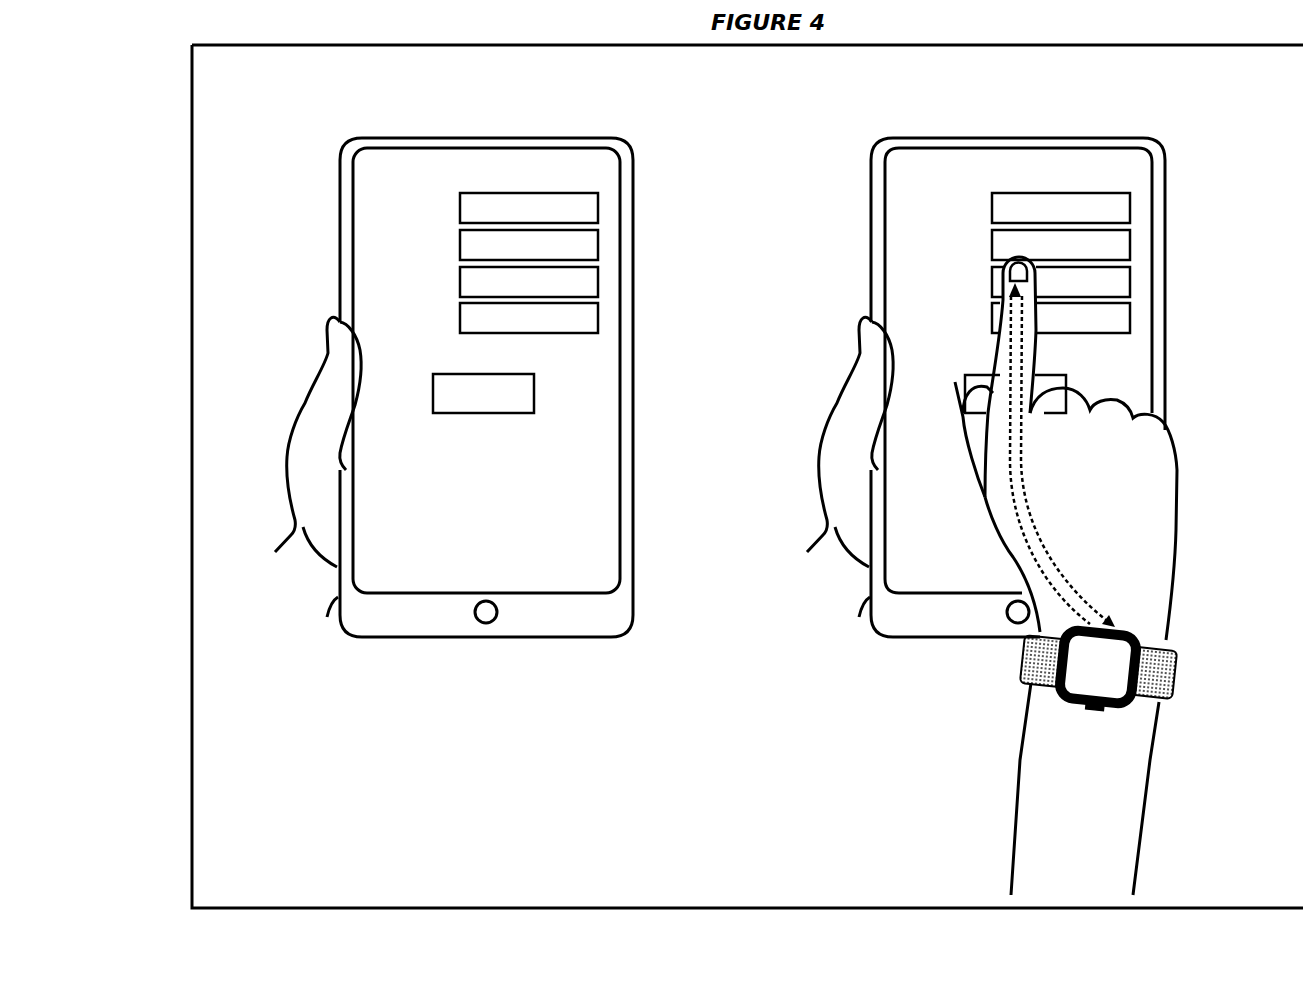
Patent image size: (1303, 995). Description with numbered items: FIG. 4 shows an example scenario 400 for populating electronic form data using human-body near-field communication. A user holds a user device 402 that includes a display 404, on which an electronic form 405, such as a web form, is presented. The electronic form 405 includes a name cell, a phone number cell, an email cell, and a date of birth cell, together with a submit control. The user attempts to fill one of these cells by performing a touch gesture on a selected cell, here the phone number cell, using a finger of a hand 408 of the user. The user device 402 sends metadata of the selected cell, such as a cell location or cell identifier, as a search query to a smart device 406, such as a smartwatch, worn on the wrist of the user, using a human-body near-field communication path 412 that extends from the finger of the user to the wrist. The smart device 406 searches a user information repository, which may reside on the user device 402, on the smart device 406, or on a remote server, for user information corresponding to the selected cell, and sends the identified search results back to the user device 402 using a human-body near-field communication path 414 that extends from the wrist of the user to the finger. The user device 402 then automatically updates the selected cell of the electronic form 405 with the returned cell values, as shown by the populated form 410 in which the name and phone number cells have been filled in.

The user interface environment 400 is at (205, 79).
The user device 402 is at (355, 138).
The display 404 is at (606, 140).
The electronic form 405 is at (563, 573).
The smart device 406 is at (1137, 700).
The hand 408 is at (1121, 569).
The form with entered data 410 is at (1014, 181).
The human-body near-field communication path 412 is at (1037, 361).
The human-body near-field communication path 414 is at (998, 351).